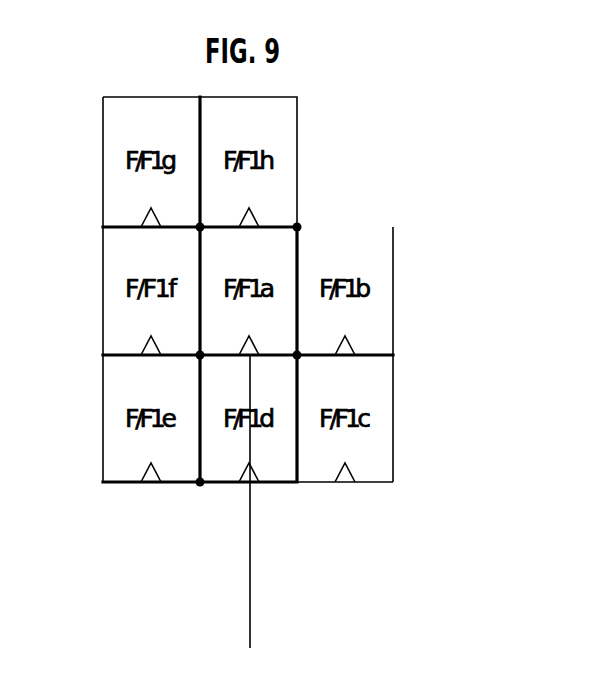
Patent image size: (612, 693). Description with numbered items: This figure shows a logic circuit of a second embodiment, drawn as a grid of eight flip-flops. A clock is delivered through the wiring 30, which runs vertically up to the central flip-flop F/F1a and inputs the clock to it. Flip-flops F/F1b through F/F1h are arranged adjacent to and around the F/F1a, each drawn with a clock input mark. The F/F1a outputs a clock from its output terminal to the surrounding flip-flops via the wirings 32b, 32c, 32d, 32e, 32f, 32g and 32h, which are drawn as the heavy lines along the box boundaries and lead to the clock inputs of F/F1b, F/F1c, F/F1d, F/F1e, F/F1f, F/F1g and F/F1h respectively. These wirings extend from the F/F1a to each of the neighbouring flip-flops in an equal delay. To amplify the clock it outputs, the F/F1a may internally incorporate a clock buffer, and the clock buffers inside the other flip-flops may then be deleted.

The wiring 32g is at (168, 229).
The wiring 32h is at (274, 225).
The wiring 32f is at (168, 357).
The wiring 32b is at (328, 357).
The wiring 32e is at (172, 484).
The wiring 32d is at (221, 484).
The wiring 32c is at (326, 483).
The wiring 30 is at (250, 628).